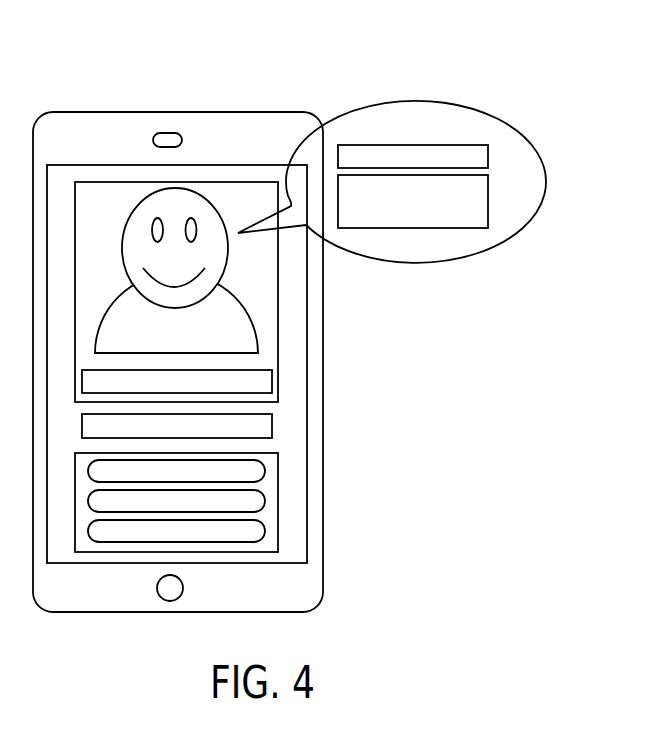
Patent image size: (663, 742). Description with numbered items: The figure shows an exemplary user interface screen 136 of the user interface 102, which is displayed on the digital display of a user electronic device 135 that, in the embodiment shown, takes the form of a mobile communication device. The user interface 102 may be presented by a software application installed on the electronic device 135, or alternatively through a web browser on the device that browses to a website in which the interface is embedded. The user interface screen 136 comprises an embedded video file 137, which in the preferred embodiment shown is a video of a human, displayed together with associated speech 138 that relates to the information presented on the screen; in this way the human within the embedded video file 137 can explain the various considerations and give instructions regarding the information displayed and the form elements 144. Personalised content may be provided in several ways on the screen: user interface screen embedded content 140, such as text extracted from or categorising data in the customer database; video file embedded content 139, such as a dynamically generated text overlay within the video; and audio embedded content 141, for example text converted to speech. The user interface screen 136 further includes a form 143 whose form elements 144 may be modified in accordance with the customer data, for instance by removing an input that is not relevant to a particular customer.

The user interface 102 is at (212, 163).
The user electronic device 135 is at (285, 111).
The user interface screen 136 is at (60, 173).
The embedded video file 137 is at (278, 315).
The associated speech 138 is at (510, 122).
The video file embedded content 139 is at (278, 380).
The user interface screen embedded content 140 is at (272, 425).
The audio embedded content 141 is at (488, 158).
The form 143 is at (278, 492).
The form elements 144 is at (265, 533).